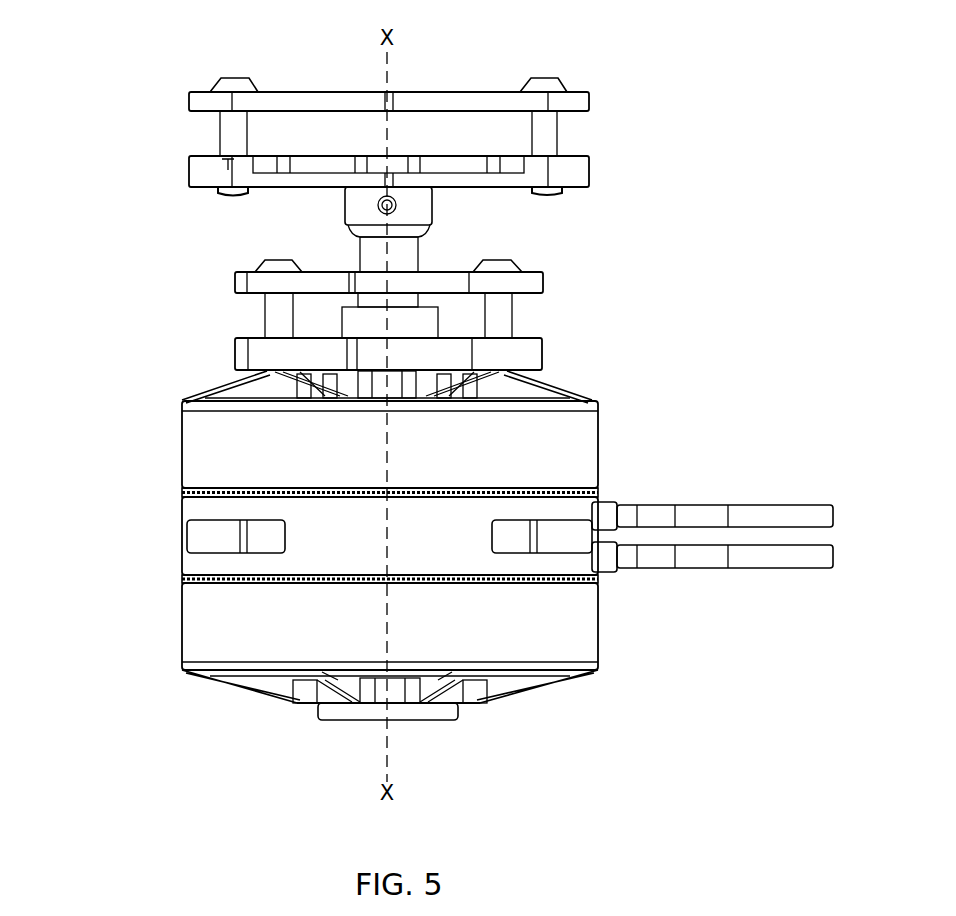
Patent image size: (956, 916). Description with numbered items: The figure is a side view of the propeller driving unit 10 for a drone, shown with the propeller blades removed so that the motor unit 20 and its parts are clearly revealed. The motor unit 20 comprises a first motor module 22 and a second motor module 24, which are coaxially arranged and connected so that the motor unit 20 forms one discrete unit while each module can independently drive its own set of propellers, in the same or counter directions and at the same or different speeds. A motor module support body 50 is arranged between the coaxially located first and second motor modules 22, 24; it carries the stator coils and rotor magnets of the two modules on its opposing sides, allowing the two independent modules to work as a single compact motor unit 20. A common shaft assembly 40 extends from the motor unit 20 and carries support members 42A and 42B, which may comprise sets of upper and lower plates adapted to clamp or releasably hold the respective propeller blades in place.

The propeller driving unit 10 is at (158, 143).
The motor unit 20 is at (602, 366).
The first motor module 22 is at (217, 458).
The second motor module 24 is at (195, 647).
The shaft assembly 40 is at (403, 262).
The support member 42A is at (478, 104).
The support member 42B is at (523, 280).
The motor module support body 50 is at (207, 551).